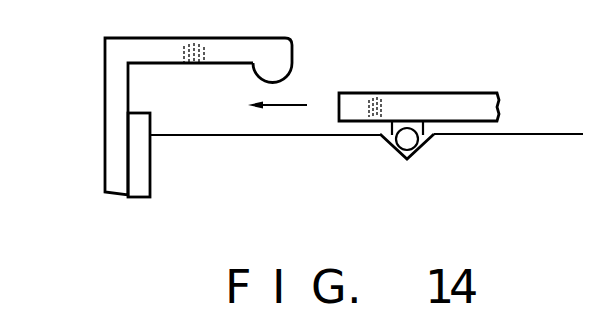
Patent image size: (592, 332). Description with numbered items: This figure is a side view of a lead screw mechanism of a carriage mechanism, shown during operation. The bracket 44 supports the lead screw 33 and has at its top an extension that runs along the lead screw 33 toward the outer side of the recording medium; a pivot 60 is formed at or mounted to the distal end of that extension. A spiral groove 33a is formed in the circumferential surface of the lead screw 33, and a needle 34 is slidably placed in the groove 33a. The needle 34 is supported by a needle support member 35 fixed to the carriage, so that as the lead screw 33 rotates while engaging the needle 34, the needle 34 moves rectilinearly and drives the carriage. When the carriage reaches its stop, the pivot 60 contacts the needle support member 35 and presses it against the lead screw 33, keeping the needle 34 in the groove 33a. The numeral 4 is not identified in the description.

The sheet feeding apparatus 4 is at (584, 184).
The lead screw 33 is at (545, 150).
The spiral groove 33a is at (420, 148).
The needle 34 is at (400, 139).
The needle support member 35 is at (445, 105).
The bracket 44 is at (118, 156).
The pivot 60 is at (283, 61).